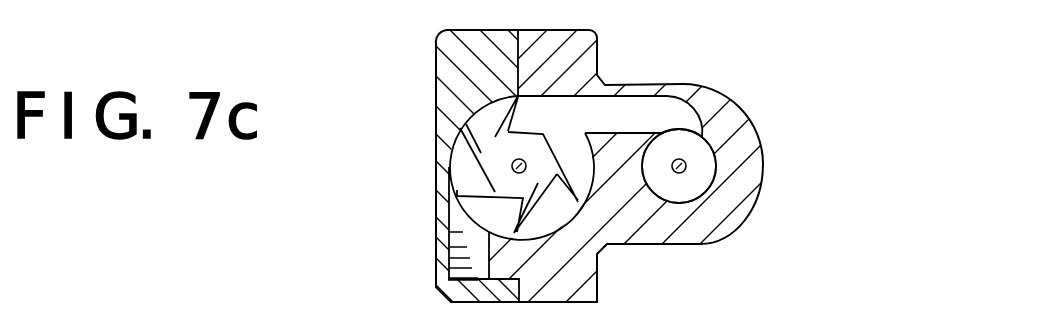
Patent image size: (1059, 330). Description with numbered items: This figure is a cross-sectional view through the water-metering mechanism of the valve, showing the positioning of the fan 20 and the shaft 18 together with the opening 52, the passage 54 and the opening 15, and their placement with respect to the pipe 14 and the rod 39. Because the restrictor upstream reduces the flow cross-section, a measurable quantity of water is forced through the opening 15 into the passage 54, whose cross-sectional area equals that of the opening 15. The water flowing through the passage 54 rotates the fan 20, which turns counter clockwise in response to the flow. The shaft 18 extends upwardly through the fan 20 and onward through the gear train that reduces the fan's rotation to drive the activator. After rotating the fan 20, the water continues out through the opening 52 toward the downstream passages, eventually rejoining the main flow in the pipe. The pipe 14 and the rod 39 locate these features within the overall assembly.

The pipe 14 is at (695, 196).
The opening 15 is at (678, 130).
The shaft 18 is at (516, 163).
The fan 20 is at (500, 161).
The rod 39 is at (678, 170).
The opening 52 is at (457, 236).
The passage 54 is at (608, 118).